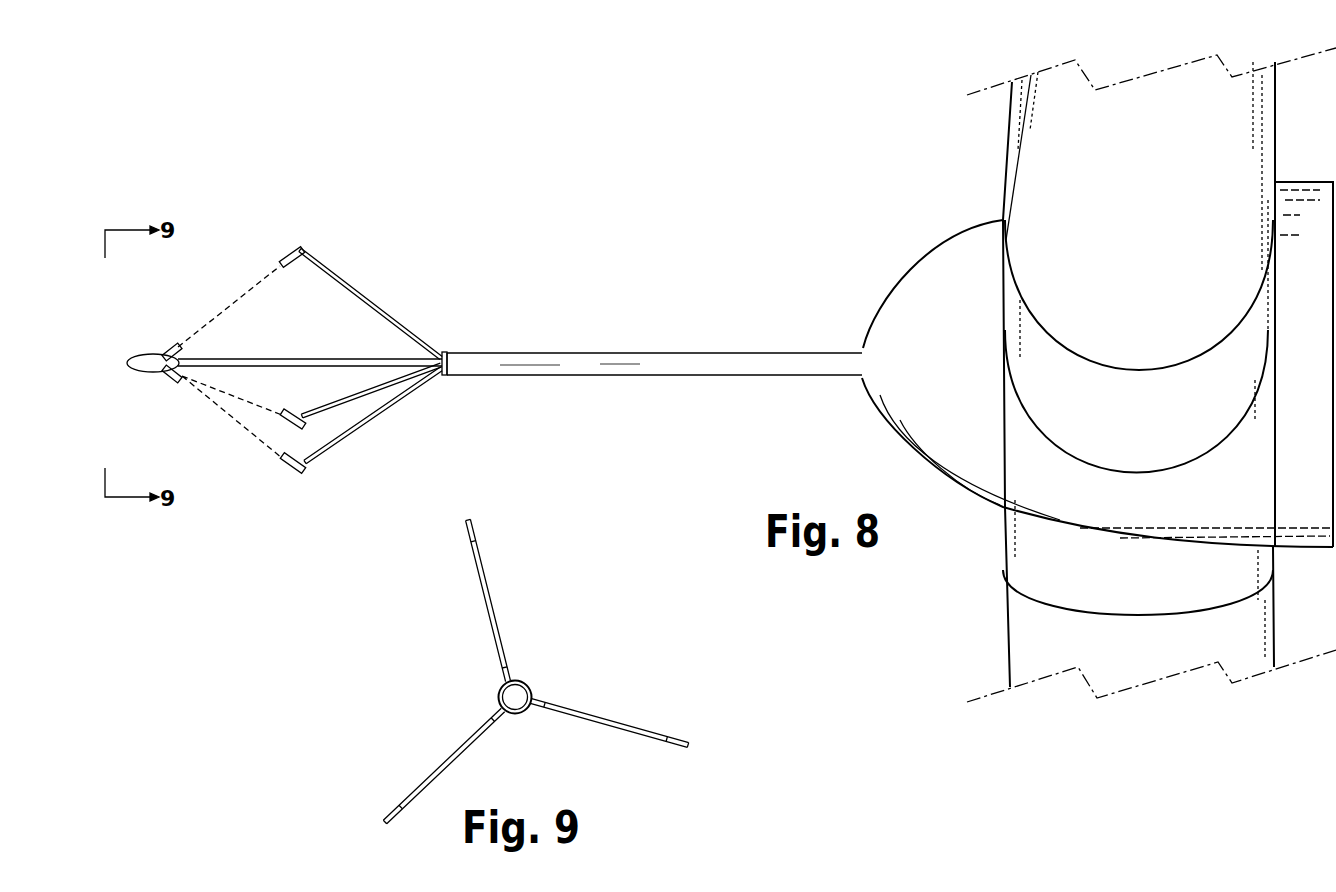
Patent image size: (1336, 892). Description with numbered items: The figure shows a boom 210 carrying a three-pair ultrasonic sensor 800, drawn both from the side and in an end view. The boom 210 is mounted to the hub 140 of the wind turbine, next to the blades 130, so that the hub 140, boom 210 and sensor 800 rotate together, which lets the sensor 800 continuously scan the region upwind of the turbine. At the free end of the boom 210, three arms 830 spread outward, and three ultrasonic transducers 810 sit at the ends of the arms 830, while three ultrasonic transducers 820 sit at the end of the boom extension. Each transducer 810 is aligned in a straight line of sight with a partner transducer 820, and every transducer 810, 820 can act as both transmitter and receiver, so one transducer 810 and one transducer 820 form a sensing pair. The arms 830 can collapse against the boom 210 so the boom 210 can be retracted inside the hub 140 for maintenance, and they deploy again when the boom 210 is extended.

In FIG. 8, the blades 130 is at (1070, 157).
In FIG. 8, the hub 140 is at (945, 327).
In FIG. 8, the boom 210 is at (617, 372).
In FIG. 8, the ultrasonic sensor 800 is at (374, 212).
In FIG. 9, the ultrasonic sensor 800 is at (551, 642).
In FIG. 8, the ultrasonic transducers 810 is at (283, 262).
In FIG. 8, the ultrasonic transducers 820 is at (166, 346).
In FIG. 8, the arms 830 is at (398, 282).
In FIG. 9, the arms 830 is at (462, 740).